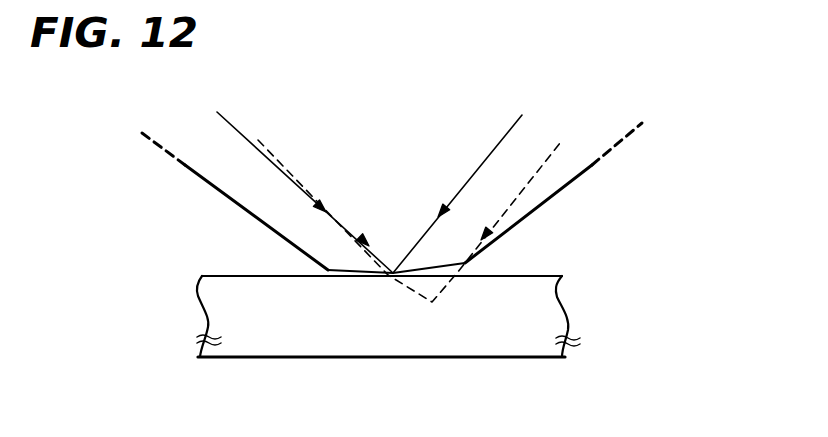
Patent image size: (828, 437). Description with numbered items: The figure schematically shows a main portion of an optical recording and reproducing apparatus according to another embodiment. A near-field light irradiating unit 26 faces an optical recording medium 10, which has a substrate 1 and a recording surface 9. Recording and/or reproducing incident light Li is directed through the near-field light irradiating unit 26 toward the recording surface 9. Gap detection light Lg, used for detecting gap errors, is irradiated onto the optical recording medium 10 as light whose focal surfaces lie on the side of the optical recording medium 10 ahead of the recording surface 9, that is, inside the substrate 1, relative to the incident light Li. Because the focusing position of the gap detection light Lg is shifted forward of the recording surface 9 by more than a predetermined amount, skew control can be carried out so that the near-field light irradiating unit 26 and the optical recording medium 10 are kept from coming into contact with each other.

The substrate 1 is at (540, 317).
The recording surface 9 is at (545, 267).
The optical recording medium 10 is at (562, 412).
The near-field light irradiating unit 26 is at (573, 183).
The recording and/or reproducing incident light Li is at (230, 132).
The gap detection light Lg is at (548, 162).